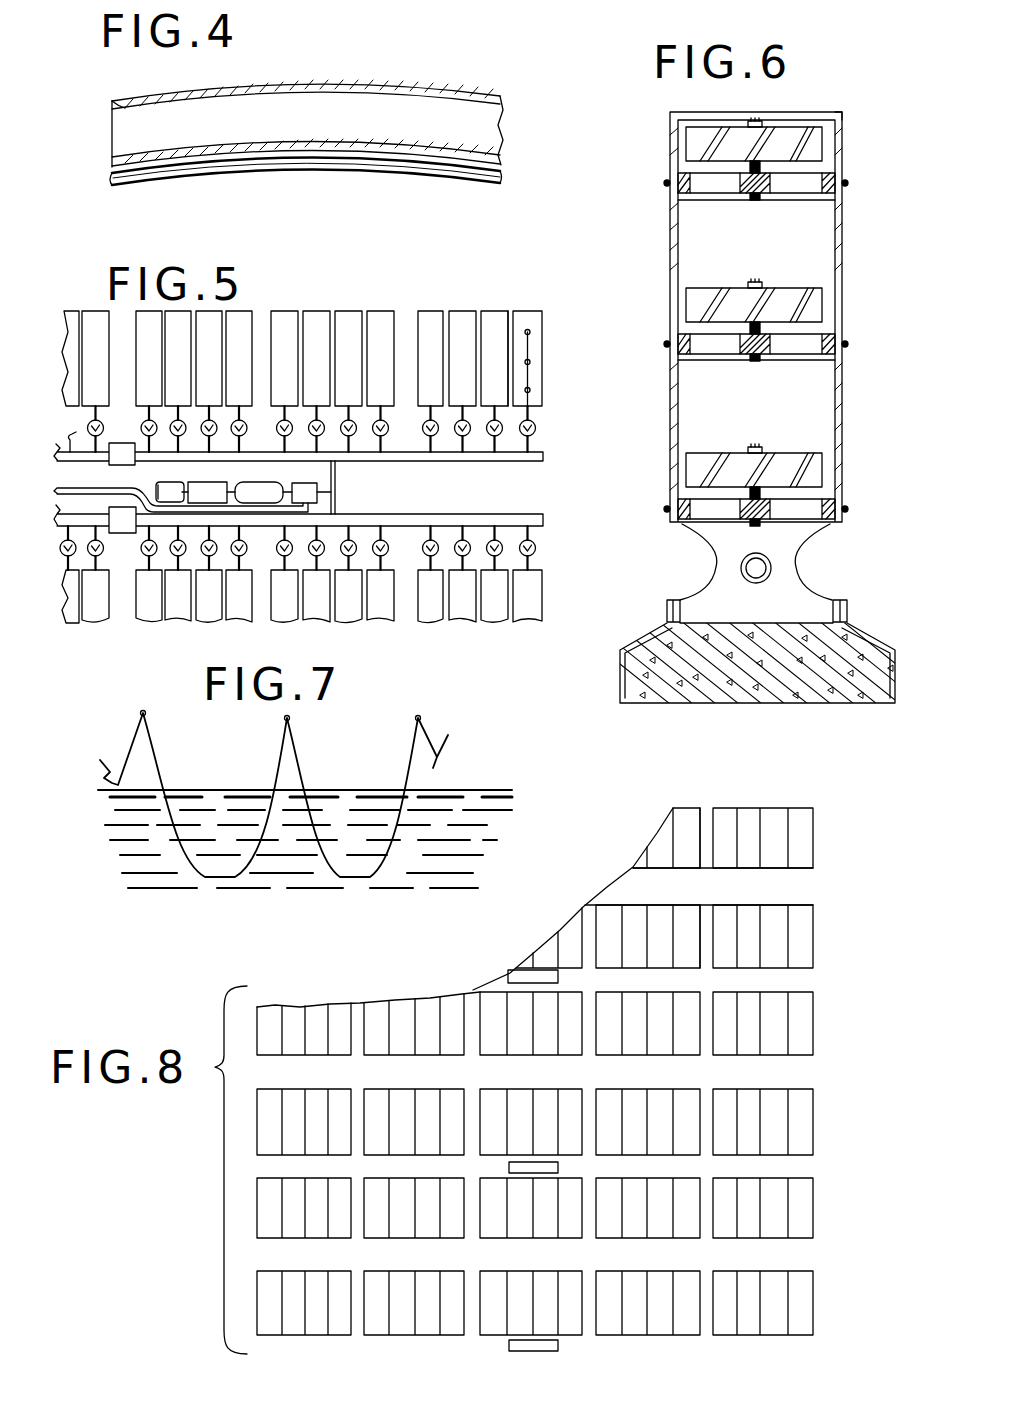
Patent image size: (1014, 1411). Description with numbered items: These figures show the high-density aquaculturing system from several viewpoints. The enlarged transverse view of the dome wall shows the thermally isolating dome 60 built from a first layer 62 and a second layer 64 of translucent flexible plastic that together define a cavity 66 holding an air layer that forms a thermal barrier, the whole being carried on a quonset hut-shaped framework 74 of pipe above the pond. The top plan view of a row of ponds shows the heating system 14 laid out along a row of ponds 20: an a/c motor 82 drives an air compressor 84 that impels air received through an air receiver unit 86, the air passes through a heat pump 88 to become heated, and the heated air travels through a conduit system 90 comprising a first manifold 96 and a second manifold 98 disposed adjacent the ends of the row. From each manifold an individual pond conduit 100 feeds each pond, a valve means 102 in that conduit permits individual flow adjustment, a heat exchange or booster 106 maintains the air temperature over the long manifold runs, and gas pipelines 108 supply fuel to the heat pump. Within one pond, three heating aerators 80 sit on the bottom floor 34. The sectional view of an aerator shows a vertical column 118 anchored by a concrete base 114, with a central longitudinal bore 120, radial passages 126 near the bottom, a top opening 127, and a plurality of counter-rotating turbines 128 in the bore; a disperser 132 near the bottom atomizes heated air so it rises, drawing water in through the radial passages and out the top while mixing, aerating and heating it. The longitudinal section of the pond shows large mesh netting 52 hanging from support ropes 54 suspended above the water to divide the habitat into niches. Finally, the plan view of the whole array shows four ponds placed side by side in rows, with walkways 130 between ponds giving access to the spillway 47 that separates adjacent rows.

In FIG. 5, the heating system 14 is at (142, 488).
In FIG. 8, the heating system 14 is at (556, 977).
In FIG. 5, the pond 20 is at (432, 314).
In FIG. 7, the pond 20 is at (472, 800).
In FIG. 8, the pond 20 is at (805, 826).
In FIG. 5, the bottom floor 34 is at (537, 346).
In FIG. 8, the spillway 47 is at (802, 887).
In FIG. 7, the netting 52 is at (158, 748).
In FIG. 7, the support ropes 54 is at (146, 712).
In FIG. 4, the thermally isolating dome 60 is at (152, 100).
In FIG. 4, the first layer 62 is at (112, 108).
In FIG. 4, the second layer 64 is at (115, 160).
In FIG. 4, the cavity 66 is at (240, 128).
In FIG. 4, the framework 74 is at (496, 178).
In FIG. 5, the heating aerator 80 is at (530, 332).
In FIG. 5, the a/c motor 82 is at (174, 478).
In FIG. 5, the air compressor 84 is at (223, 478).
In FIG. 5, the air receiver unit 86 is at (270, 478).
In FIG. 5, the heat pump 88 is at (296, 468).
In FIG. 5, the conduit system 90 is at (335, 471).
In FIG. 5, the first manifold 96 is at (543, 457).
In FIG. 5, the second manifold 98 is at (543, 521).
In FIG. 5, the individual pond conduit 100 is at (532, 448).
In FIG. 5, the valve means 102 is at (535, 428).
In FIG. 5, the heat exchange or booster 106 is at (121, 443).
In FIG. 5, the gas pipelines 108 is at (76, 492).
In FIG. 6, the concrete base 114 is at (672, 697).
In FIG. 6, the vertical column 118 is at (843, 393).
In FIG. 6, the central longitudinal bore 120 is at (778, 404).
In FIG. 6, the radial passages 126 is at (690, 538).
In FIG. 6, the top opening 127 is at (828, 114).
In FIG. 6, the counter-rotating turbines 128 is at (815, 145).
In FIG. 5, the walkways 130 is at (511, 322).
In FIG. 8, the walkways 130 is at (706, 813).
In FIG. 6, the disperser 132 is at (771, 568).